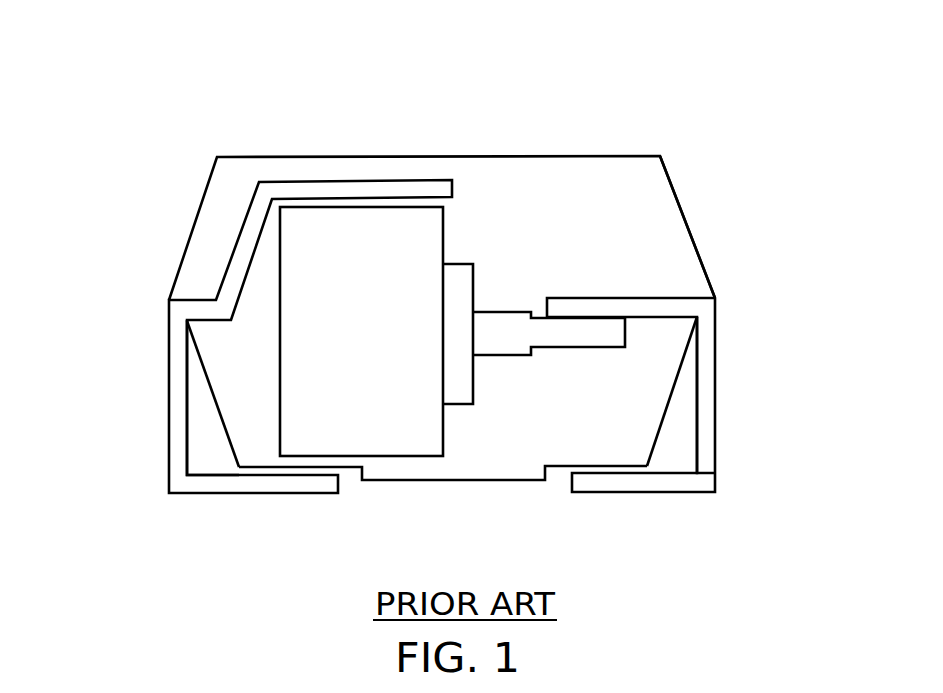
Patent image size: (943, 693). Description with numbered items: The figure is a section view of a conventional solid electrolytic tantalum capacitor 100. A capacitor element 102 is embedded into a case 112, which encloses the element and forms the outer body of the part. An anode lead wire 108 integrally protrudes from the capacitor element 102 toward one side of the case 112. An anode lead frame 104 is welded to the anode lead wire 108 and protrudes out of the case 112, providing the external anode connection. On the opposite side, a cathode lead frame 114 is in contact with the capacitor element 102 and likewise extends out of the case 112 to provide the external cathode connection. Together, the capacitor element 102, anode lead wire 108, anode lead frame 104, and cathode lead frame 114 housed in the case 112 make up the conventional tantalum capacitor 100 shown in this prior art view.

The tantalum capacitor 100 is at (613, 76).
The capacitor element 102 is at (297, 380).
The anode lead frame 104 is at (712, 362).
The anode lead wire 108 is at (510, 346).
The case 112 is at (675, 222).
The cathode lead frame 114 is at (177, 442).